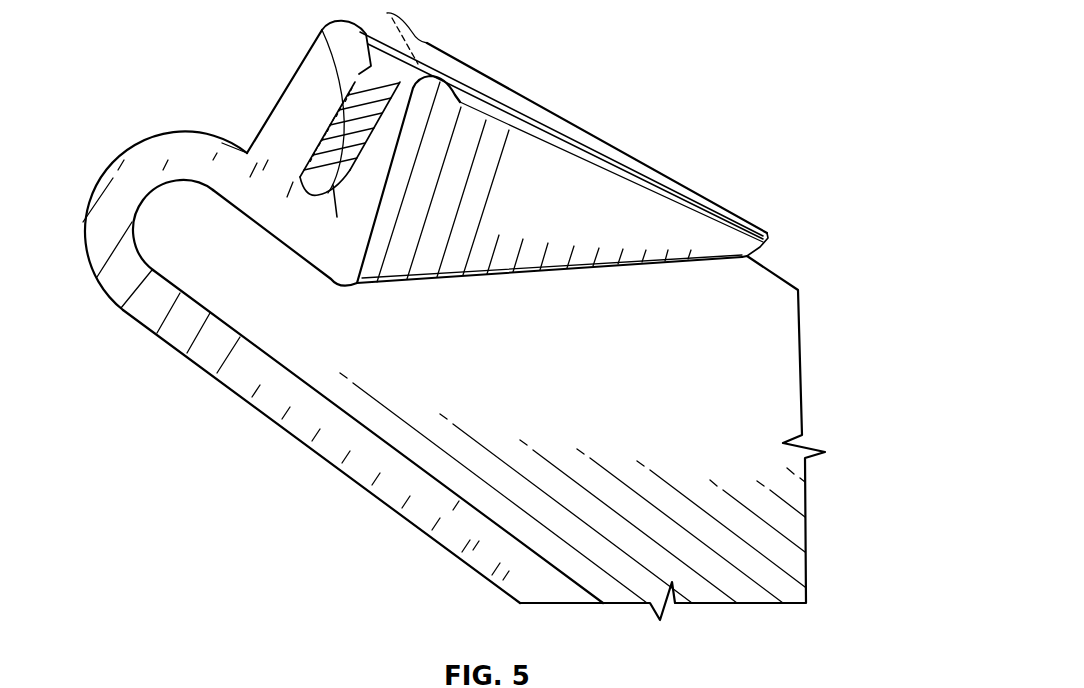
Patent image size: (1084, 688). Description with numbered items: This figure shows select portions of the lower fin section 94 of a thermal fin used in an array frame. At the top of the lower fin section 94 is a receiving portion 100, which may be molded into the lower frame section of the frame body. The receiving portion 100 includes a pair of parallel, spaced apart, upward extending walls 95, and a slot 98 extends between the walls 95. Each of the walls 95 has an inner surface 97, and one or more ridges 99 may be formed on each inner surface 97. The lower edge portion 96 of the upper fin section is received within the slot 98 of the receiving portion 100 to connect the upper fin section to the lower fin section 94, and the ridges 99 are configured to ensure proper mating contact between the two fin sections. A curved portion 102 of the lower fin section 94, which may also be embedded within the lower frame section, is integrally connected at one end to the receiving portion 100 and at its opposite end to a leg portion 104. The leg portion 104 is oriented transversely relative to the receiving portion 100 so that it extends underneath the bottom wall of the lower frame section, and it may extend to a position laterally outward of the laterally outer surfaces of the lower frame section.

The lower fin section 94 is at (218, 35).
The walls 95 is at (276, 125).
The lower edge portion 96 is at (422, 27).
The inner surface 97 is at (337, 217).
The slot 98 is at (311, 199).
The ridges 99 is at (345, 100).
The receiving portion 100 is at (343, 41).
The curved portion 102 is at (120, 158).
The leg portion 104 is at (363, 478).